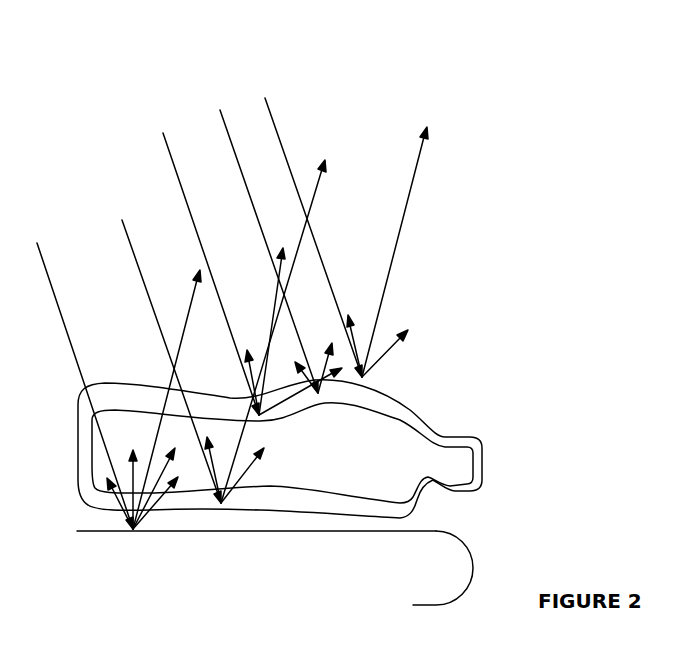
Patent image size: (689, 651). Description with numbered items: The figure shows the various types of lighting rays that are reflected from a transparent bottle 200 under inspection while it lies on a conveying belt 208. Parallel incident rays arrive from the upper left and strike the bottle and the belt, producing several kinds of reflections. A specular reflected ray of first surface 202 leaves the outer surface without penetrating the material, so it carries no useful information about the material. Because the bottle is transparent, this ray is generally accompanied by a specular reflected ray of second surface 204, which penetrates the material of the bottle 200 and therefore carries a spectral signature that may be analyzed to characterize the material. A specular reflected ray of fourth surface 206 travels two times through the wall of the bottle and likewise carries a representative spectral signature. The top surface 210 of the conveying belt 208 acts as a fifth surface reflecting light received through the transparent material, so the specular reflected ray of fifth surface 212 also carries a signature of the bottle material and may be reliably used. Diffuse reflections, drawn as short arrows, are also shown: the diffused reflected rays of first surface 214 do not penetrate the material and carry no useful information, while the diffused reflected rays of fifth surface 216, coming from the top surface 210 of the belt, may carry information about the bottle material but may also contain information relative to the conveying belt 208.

The transparent bottle 200 is at (470, 470).
The specular reflected ray of first surface 202 is at (408, 212).
The specular reflected ray of second surface 204 is at (318, 193).
The specular reflected ray of fourth surface 206 is at (268, 325).
The conveying belt 208 is at (458, 560).
The top surface of the conveying belt 210 is at (437, 531).
The specular reflected ray of fifth surface 212 is at (205, 420).
The diffused reflected rays of first surface 214 is at (380, 360).
The diffused reflected rays of fifth surface 216 is at (165, 470).